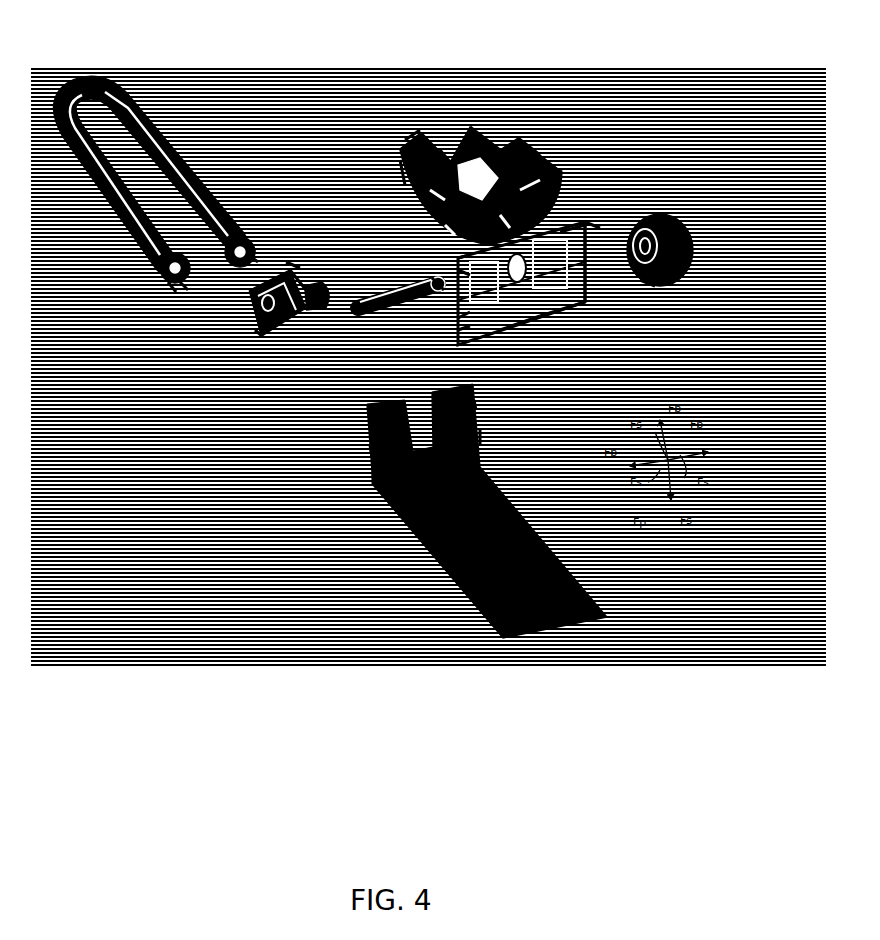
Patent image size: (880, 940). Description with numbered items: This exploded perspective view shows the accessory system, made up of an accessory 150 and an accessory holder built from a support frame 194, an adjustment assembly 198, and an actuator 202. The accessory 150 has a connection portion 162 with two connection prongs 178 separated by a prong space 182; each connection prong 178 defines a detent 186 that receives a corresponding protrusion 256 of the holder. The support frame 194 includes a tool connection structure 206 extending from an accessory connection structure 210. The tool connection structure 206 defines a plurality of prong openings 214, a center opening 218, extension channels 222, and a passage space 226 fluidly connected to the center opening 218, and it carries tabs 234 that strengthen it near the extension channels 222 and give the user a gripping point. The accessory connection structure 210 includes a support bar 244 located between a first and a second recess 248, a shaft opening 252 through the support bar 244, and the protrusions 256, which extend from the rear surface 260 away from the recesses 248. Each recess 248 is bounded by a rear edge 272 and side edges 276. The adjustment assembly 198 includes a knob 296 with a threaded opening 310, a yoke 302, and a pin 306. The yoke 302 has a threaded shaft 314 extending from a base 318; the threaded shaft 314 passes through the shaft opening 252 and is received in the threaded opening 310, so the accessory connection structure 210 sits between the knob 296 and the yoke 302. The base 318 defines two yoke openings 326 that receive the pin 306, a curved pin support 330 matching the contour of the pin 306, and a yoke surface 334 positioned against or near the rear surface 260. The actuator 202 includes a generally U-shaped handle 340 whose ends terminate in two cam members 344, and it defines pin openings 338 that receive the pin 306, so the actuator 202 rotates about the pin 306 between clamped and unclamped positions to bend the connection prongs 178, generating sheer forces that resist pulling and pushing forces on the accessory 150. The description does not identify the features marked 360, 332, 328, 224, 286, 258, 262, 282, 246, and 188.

The actuator 202 is at (142, 88).
The handle 340 is at (73, 135).
The U-bolt threaded end 360 is at (158, 278).
The pin openings 338 is at (229, 228).
The cam members 344 is at (252, 235).
The base 318 is at (256, 236).
The yoke 302 is at (293, 250).
The washer 332 is at (172, 296).
The yoke surface 334 is at (182, 296).
The curved pin support 330 is at (252, 322).
The yoke openings 326 is at (240, 306).
The adjustment assembly 198 is at (250, 366).
The clamp block aperture 328 is at (306, 266).
The pin 306 is at (290, 338).
The pivot pin 224 is at (372, 318).
The threaded shaft 314 is at (362, 296).
The pin head 286 is at (456, 279).
The tool connection structure 206 is at (567, 190).
The center opening 218 is at (462, 137).
The prong openings 214 is at (425, 140).
The passage space 226 is at (447, 132).
The tabs 234 is at (532, 150).
The support frame 194 is at (562, 152).
The shaft opening 252 is at (520, 326).
The accessory connection structure 210 is at (586, 296).
The bracket slot 258 is at (572, 262).
The side edges 276 is at (568, 272).
The bracket lower edge 262 is at (572, 316).
The recesses 248 is at (560, 326).
The rear edge 272 is at (574, 230).
The extension channels 222 is at (590, 228).
The bracket top 282 is at (456, 256).
The support bar 244 is at (458, 270).
The protrusions 256 is at (448, 311).
The bracket lower edge 246 is at (461, 322).
The knob 296 is at (674, 218).
The threaded opening 310 is at (652, 286).
The accessory 150 is at (428, 557).
The prong space 182 is at (420, 394).
The connection prongs 178 is at (366, 411).
The rear surface 260 is at (474, 394).
The blade notch 188 is at (477, 406).
The detents 186 is at (371, 452).
The connection portion 162 is at (372, 484).